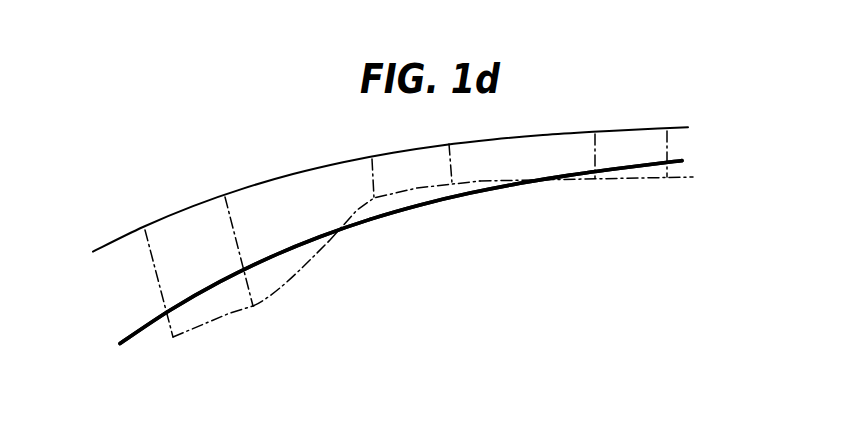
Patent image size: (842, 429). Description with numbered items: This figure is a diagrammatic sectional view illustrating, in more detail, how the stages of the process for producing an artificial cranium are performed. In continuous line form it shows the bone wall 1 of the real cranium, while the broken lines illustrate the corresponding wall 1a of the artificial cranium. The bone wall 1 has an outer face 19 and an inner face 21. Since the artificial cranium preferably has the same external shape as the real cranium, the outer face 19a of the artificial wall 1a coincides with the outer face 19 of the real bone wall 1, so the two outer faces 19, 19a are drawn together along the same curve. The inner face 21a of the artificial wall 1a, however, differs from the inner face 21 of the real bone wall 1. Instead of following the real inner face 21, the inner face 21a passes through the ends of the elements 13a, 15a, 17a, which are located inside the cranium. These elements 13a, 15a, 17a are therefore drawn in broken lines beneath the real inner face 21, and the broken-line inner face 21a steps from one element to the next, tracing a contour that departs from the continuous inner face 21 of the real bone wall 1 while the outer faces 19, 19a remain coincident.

The bone wall 1 is at (382, 226).
The wall of the artificial cranium 1a is at (293, 283).
The element 13a is at (232, 310).
The element 15a is at (418, 192).
The element 17a is at (628, 176).
The outer face 19 is at (390, 232).
The outer face 19a is at (242, 187).
The inner face 21 is at (477, 195).
The inner face 21a is at (317, 252).